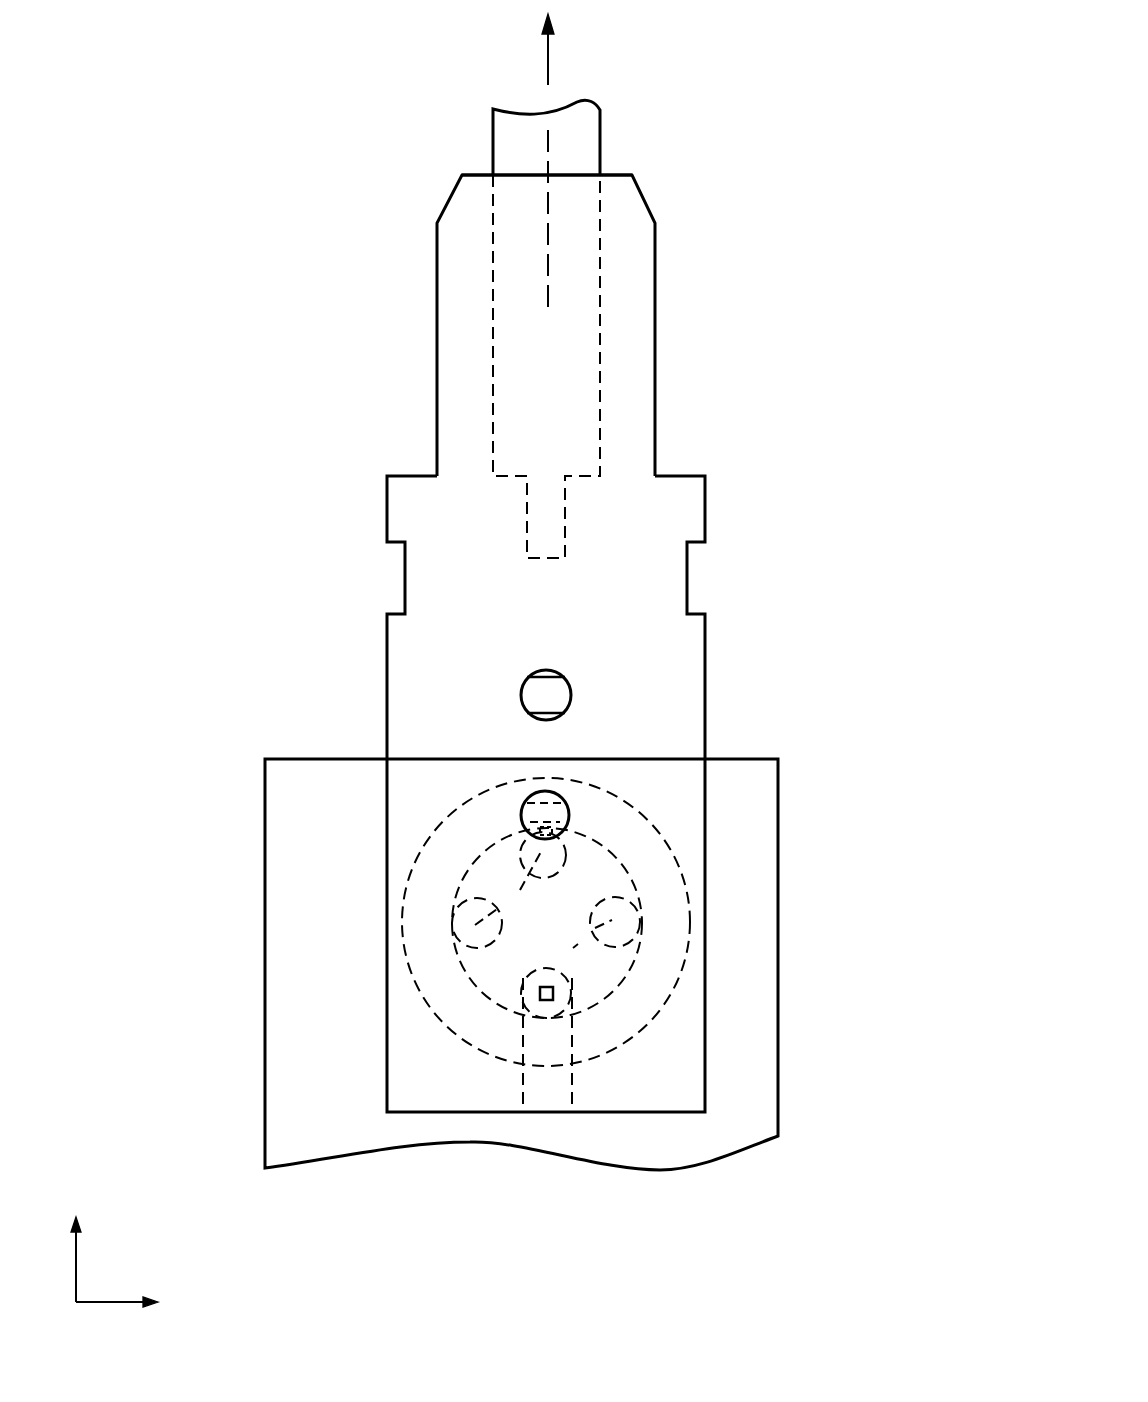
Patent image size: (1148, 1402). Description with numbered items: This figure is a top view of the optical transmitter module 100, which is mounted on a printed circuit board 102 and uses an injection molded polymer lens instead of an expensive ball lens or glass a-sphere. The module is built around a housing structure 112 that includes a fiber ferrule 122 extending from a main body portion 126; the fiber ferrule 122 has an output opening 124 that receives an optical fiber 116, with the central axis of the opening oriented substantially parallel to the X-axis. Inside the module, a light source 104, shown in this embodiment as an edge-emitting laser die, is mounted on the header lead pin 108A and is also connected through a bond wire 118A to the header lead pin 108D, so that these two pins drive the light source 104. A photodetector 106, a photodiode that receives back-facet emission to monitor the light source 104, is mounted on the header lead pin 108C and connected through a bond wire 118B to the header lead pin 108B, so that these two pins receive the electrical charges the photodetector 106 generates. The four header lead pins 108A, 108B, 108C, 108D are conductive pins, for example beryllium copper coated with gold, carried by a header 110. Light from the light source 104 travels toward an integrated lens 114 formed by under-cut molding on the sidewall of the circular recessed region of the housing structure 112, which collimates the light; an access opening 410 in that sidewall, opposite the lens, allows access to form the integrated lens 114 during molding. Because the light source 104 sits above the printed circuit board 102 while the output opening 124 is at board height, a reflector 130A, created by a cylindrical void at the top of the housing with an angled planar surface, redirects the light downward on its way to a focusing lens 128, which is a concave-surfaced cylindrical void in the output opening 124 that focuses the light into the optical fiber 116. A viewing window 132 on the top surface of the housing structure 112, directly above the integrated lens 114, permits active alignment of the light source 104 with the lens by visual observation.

The optical transmitter module 100 is at (828, 1235).
The printed circuit board 102 is at (778, 960).
The light source 104 is at (567, 832).
The photodetector 106 is at (551, 1000).
The header lead pin 108A is at (570, 857).
The header lead pin 108B is at (630, 903).
The header lead pin 108C is at (522, 980).
The header lead pin 108D is at (465, 905).
The header 110 is at (416, 985).
The housing structure 112 is at (705, 512).
The integrated lens 114 is at (552, 812).
The optical fiber 116 is at (602, 118).
The bond wire 118A is at (518, 892).
The bond wire 118B is at (573, 948).
The fiber ferrule 122 is at (235, 177).
The output opening 124 is at (490, 174).
The main body portion 126 is at (235, 1113).
The focusing lens 128 is at (550, 540).
The reflector 130A is at (550, 693).
The viewing window 132 is at (553, 788).
The access opening 410 is at (522, 1093).